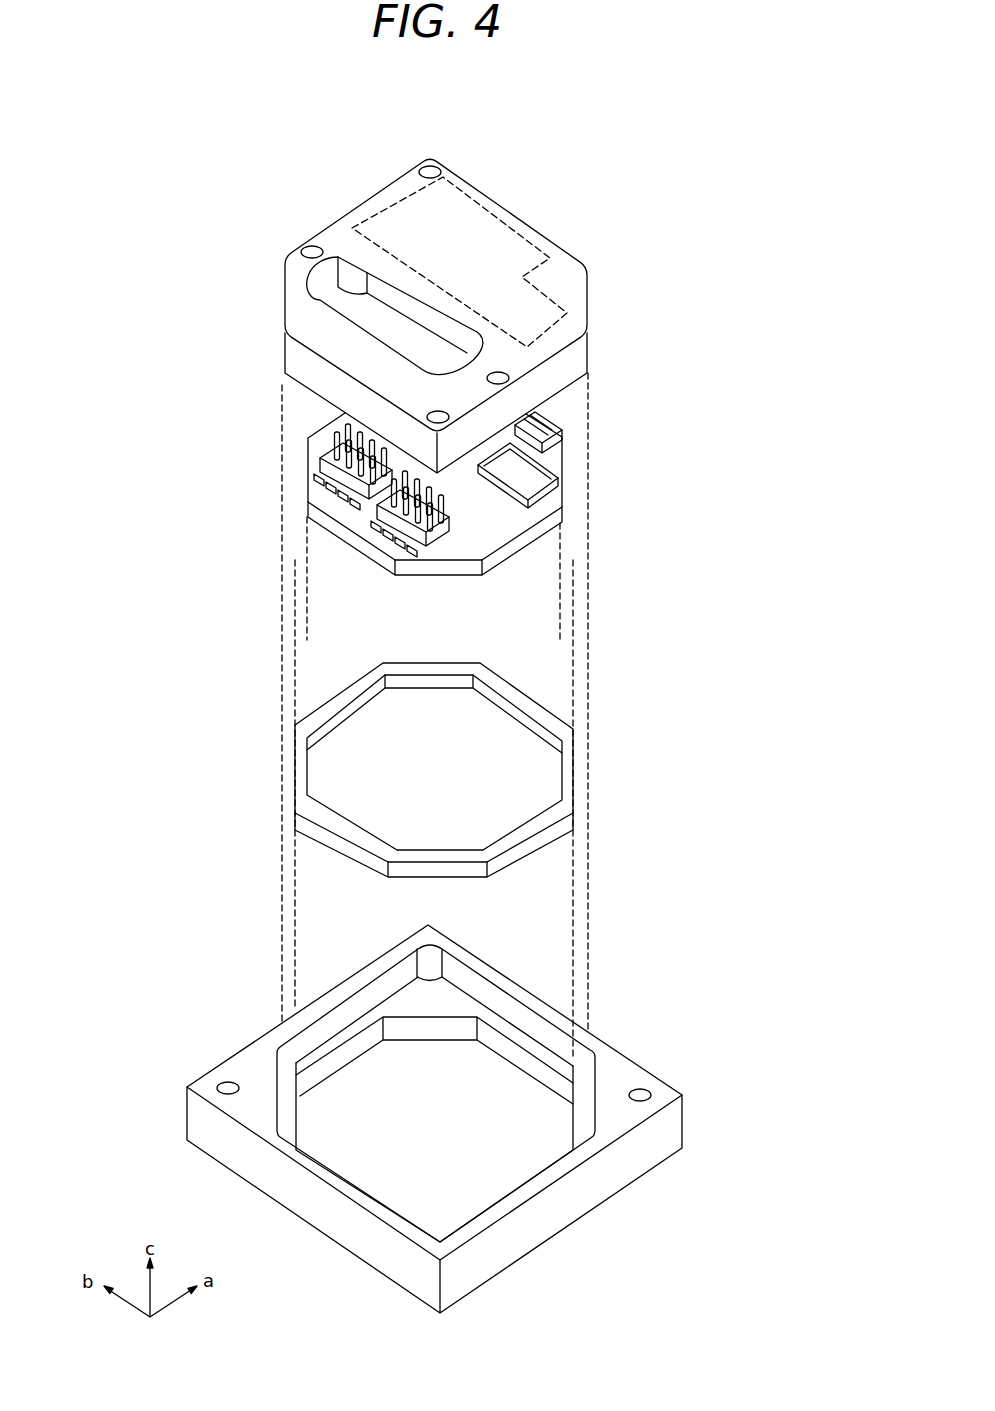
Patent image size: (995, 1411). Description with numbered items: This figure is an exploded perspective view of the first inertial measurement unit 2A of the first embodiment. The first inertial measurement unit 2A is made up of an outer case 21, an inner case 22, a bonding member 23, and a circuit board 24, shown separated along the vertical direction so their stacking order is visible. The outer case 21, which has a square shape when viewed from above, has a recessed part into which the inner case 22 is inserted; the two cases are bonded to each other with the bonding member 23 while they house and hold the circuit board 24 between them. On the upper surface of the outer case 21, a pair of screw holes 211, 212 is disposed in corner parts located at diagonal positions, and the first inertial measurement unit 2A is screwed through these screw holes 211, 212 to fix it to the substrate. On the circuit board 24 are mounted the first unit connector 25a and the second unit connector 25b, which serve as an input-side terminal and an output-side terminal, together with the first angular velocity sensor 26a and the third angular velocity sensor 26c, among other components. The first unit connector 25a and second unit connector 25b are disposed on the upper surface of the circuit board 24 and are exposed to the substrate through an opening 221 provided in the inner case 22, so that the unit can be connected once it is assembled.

The first inertial measurement unit 2A is at (436, 691).
The outer case 21 is at (436, 1119).
The screw hole 211 is at (230, 1088).
The screw hole 212 is at (641, 1094).
The inner case 22 is at (479, 291).
The opening 221 is at (418, 310).
The bonding member 23 is at (568, 780).
The circuit board 24 is at (446, 488).
The first unit connector 25a is at (322, 461).
The second unit connector 25b is at (378, 503).
The first angular velocity sensor 26a is at (556, 425).
The third angular velocity sensor 26c is at (558, 480).